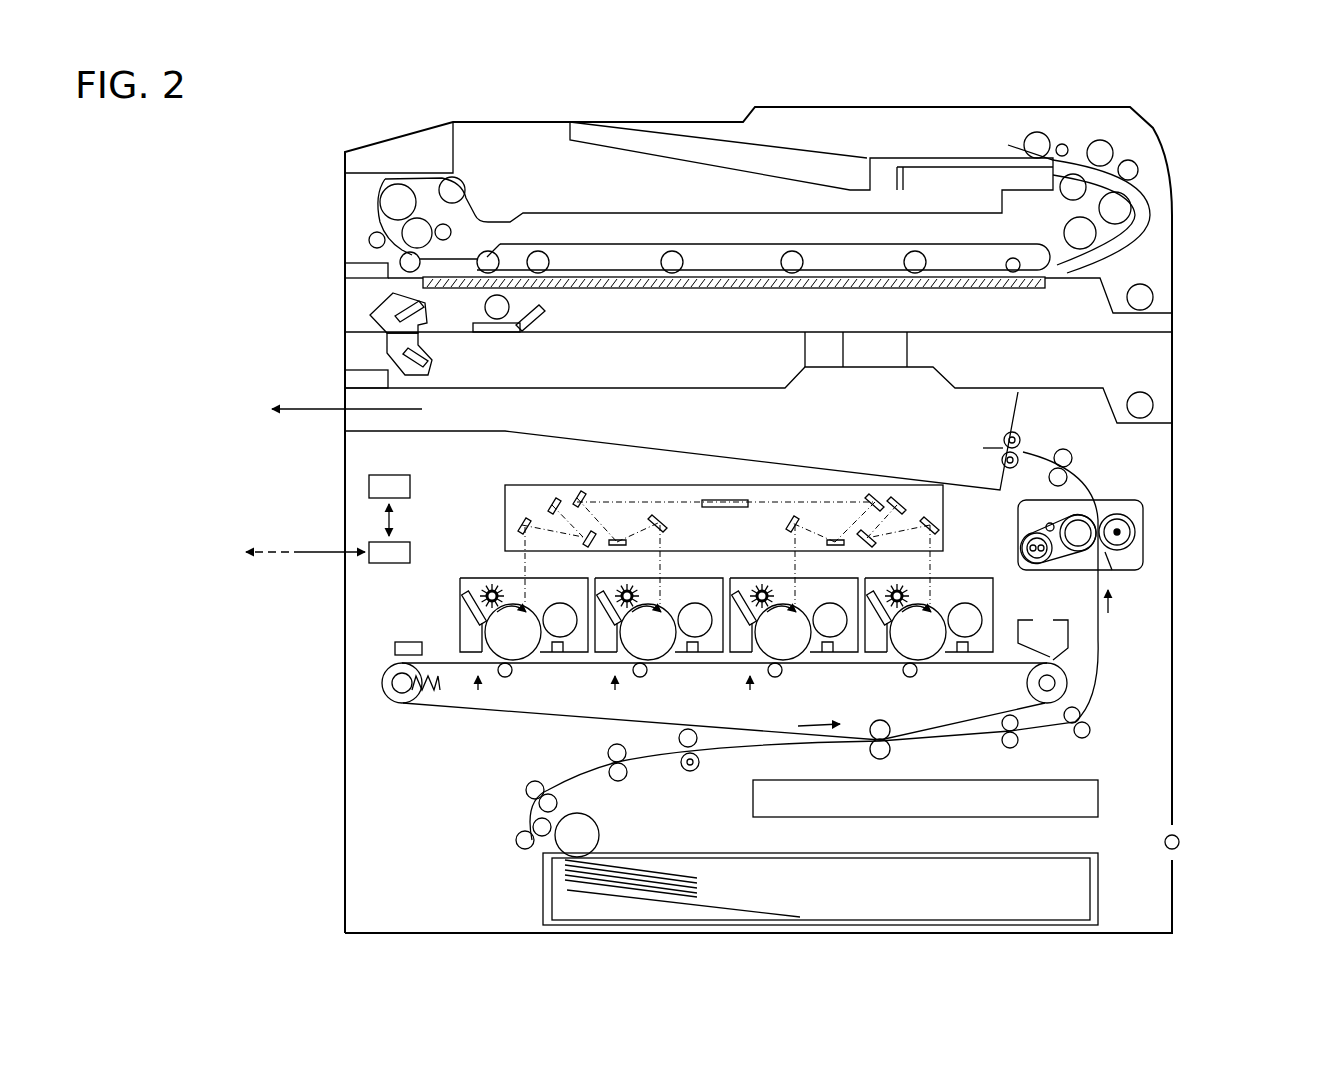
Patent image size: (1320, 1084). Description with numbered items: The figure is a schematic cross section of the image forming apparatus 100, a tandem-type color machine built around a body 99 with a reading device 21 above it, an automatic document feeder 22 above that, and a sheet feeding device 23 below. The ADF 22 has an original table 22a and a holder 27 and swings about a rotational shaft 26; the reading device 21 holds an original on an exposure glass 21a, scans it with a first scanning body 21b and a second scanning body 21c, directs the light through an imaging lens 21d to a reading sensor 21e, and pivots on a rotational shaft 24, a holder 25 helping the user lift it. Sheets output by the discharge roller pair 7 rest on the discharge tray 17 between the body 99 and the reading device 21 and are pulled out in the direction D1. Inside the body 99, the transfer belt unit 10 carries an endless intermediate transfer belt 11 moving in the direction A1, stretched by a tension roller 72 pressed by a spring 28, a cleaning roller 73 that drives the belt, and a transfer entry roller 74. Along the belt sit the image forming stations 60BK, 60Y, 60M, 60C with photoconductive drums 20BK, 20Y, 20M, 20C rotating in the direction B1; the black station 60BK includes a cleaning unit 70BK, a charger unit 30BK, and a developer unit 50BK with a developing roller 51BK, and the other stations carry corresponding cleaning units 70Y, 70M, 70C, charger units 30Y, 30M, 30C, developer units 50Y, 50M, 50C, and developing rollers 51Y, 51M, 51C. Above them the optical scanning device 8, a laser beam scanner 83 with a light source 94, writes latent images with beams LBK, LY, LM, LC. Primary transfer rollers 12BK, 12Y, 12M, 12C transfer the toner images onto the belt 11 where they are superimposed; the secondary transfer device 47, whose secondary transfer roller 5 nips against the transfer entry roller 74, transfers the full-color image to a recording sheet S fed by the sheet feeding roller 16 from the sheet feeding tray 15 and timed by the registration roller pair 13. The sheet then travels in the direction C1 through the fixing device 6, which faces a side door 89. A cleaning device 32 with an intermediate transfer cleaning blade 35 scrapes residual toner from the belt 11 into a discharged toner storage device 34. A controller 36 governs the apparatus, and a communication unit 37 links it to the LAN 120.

The image forming apparatus 100 is at (1258, 126).
The automatic document feeder 22 is at (326, 224).
The original table 22a is at (722, 140).
The holder 27 is at (347, 268).
The reading device 21 is at (326, 350).
The exposure glass 21a is at (776, 290).
The first scanning body 21b is at (556, 308).
The second scanning body 21c is at (448, 352).
The imaging lens 21d is at (805, 350).
The reading sensor 21e is at (907, 345).
The holder 25 is at (347, 382).
The rotational shaft 26 is at (1153, 297).
The rotational shaft 24 is at (1153, 405).
The pull-out direction D1 is at (318, 412).
The discharge tray 17 is at (845, 472).
The controller 36 is at (411, 487).
The communication unit 37 is at (411, 552).
The body section 99 is at (298, 516).
The local area network 120 is at (326, 554).
The optical scanning device 8 is at (502, 480).
The light source 94 is at (726, 492).
The laser beam scanner 83 is at (945, 512).
The laser light beam LC is at (510, 528).
The laser light beam LM is at (672, 538).
The laser light beam LY is at (790, 535).
The laser light beam LBK is at (935, 565).
The rotational direction B1 is at (711, 564).
The photoconductive drum 20C is at (527, 641).
The photoconductive drum 20M is at (664, 641).
The photoconductive drum 20Y is at (797, 641).
The photoconductive drum 20BK is at (939, 641).
The cleaning device for cyan 30C is at (470, 590).
The cleaning device for magenta 30M is at (608, 585).
The cleaning device for yellow 30Y is at (743, 585).
The charger unit 30BK is at (878, 585).
The charging device for cyan 70C is at (468, 620).
The charging device for magenta 70M is at (601, 612).
The charging device for yellow 70Y is at (736, 612).
The cleaning unit 70BK is at (871, 612).
The developing device for cyan 50C is at (573, 662).
The developing device for magenta 50M is at (708, 655).
The developing device for yellow 50Y is at (842, 655).
The developer unit 50BK is at (977, 655).
The developing roller for cyan 51C is at (550, 653).
The developing roller for magenta 51M is at (685, 653).
The developing roller for yellow 51Y is at (820, 653).
The developing roller 51BK is at (960, 653).
The primary transfer roller 12C is at (505, 678).
The primary transfer roller 12M is at (641, 678).
The primary transfer roller 12Y is at (775, 678).
The primary transfer roller 12BK is at (908, 678).
The image forming station 60C is at (475, 693).
The image forming station 60M is at (613, 693).
The image forming station 60Y is at (700, 760).
The image forming station 60BK is at (1002, 582).
The intermediate transfer belt 11 is at (536, 712).
The transfer belt unit 10 is at (392, 712).
The tension roller 72 is at (380, 668).
The spring 28 is at (430, 695).
The cleaning roller 73 is at (1068, 683).
The transfer entry roller 74 is at (915, 728).
The secondary transfer roller 5 is at (892, 752).
The secondary transfer device 47 is at (860, 746).
The belt transfer direction A1 is at (819, 713).
The sheet feeding tray 15 is at (688, 843).
The sheet feeding roller 16 is at (588, 810).
The registration roller pair 13 is at (698, 777).
The discharge roller pair 7 is at (1023, 433).
The sheet conveyance direction C1 is at (1096, 533).
The fixing device 6 is at (1118, 496).
The side door 89 is at (1172, 552).
The intermediate transfer cleaning blade 35 is at (1030, 625).
The cleaning device 32 is at (1056, 620).
The discharged toner storage device 34 is at (1098, 793).
The sheet feeding device 23 is at (518, 878).
The recording sheet S is at (680, 870).